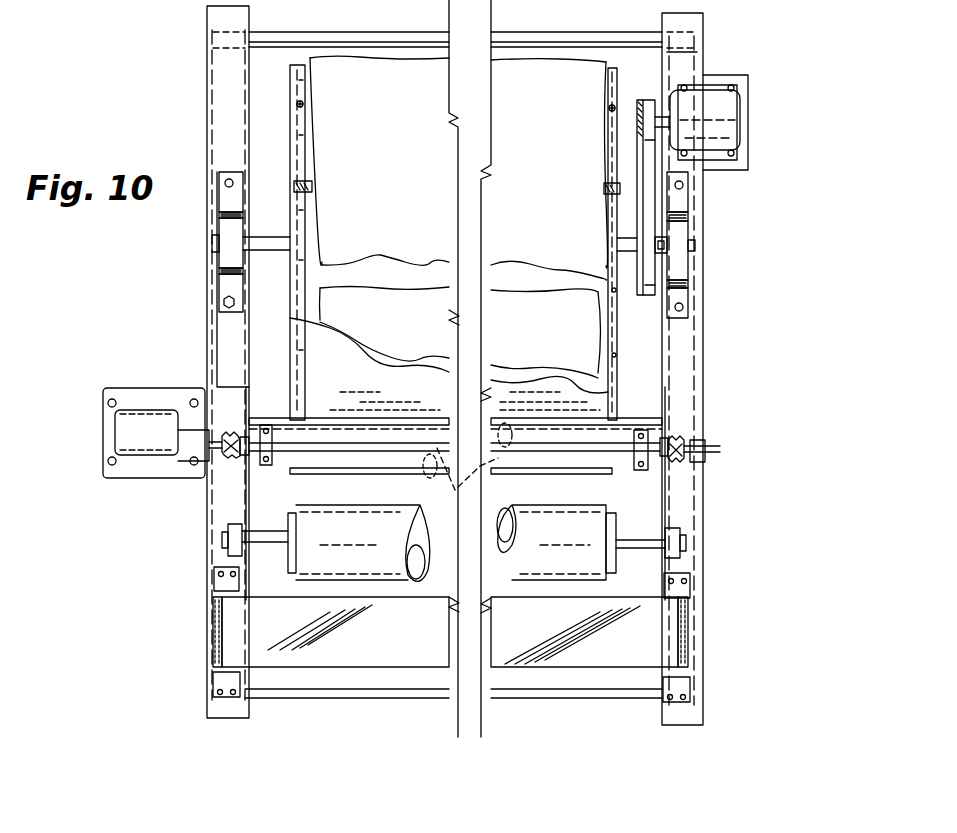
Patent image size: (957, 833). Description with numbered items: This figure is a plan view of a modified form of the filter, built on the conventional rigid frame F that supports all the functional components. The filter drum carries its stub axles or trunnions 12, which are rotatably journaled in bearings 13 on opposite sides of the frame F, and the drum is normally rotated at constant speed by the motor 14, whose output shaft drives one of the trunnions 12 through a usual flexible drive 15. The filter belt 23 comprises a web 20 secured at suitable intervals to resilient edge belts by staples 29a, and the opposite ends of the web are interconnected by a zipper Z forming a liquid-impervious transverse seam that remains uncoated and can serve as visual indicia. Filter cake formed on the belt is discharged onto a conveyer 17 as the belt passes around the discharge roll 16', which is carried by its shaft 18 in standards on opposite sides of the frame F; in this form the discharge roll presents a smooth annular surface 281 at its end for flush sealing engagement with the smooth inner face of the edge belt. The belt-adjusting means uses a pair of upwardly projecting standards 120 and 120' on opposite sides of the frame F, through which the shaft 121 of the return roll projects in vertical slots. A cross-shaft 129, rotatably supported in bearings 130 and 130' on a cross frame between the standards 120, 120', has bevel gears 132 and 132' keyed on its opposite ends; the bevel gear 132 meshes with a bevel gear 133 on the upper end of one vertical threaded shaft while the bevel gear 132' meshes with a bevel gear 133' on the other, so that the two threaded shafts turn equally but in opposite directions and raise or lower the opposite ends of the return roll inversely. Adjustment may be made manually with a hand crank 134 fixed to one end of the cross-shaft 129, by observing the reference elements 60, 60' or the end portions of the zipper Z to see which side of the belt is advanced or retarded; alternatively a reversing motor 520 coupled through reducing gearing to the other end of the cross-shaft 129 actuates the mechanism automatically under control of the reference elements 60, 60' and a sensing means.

The rigid frame F is at (215, 347).
The filter belt 23 is at (305, 165).
The reference element 60 is at (321, 104).
The reference element 60' is at (585, 110).
The zipper Z is at (308, 187).
The staples 29a is at (614, 354).
The trunnions 12 is at (215, 243).
The bearings 13 is at (227, 262).
The motor 14 is at (720, 105).
The flexible drive 15 is at (650, 187).
The reversing motor 520 is at (118, 430).
The bevel gear 133 is at (252, 414).
The bevel gear 132 is at (261, 423).
The bearings 130 is at (349, 424).
The bearings 130' is at (578, 423).
The bevel gear 132' is at (706, 417).
The bevel gear 133' is at (711, 430).
The hand crank 134 is at (705, 445).
The shaft 121 is at (352, 460).
The cross-shaft 129 is at (417, 452).
The web 20 is at (467, 480).
The discharge roll 16' is at (451, 543).
The annular surface 281 is at (290, 522).
The shaft 18 is at (270, 543).
The conveyer 17 is at (450, 632).
The standard 120 is at (203, 493).
The standard 120' is at (713, 493).